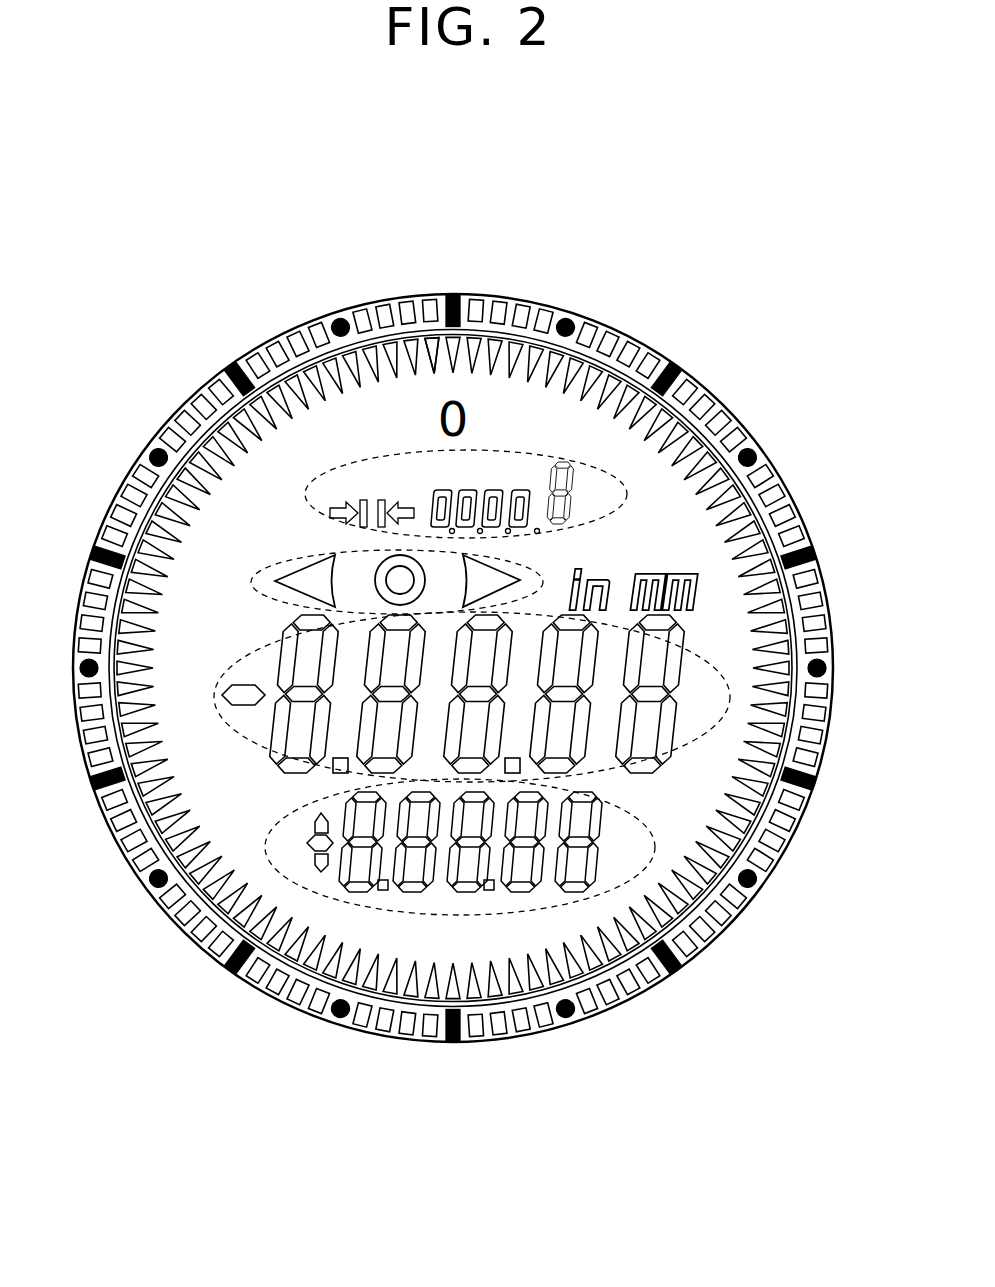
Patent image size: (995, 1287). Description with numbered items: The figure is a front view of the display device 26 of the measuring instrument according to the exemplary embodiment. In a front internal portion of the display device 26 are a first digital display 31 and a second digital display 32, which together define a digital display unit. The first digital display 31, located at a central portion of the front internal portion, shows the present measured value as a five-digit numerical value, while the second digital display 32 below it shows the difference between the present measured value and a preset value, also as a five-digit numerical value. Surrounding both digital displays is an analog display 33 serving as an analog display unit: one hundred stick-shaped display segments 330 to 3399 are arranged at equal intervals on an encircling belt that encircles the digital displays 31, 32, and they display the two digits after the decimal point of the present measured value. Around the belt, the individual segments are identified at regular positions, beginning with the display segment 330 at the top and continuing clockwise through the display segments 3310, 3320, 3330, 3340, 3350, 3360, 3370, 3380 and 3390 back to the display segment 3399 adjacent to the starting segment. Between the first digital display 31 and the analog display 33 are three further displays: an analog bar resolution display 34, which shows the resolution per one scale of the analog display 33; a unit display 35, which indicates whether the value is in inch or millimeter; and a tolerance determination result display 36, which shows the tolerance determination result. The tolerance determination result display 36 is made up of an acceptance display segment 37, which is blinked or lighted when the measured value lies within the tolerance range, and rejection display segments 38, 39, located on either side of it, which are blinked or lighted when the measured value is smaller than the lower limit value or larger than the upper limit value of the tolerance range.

The display device 26 is at (741, 217).
The first digital display 31 is at (237, 722).
The second digital display 32 is at (293, 808).
The analog display 33 is at (548, 352).
The display segment 330 is at (445, 352).
The display segment 3310 is at (664, 376).
The display segment 3320 is at (768, 581).
The display segment 3330 is at (795, 800).
The display segment 3340 is at (680, 960).
The display segment 3350 is at (440, 980).
The display segment 3360 is at (236, 958).
The display segment 3370 is at (112, 790).
The display segment 3380 is at (122, 585).
The display segment 3390 is at (240, 366).
The display segment 3399 is at (422, 352).
The analog bar resolution display 34 is at (628, 505).
The unit display 35 is at (644, 572).
The tolerance determination result display 36 is at (272, 561).
The acceptance display segment 37 is at (377, 570).
The rejection display segment 38 is at (297, 588).
The rejection display segment 39 is at (508, 573).